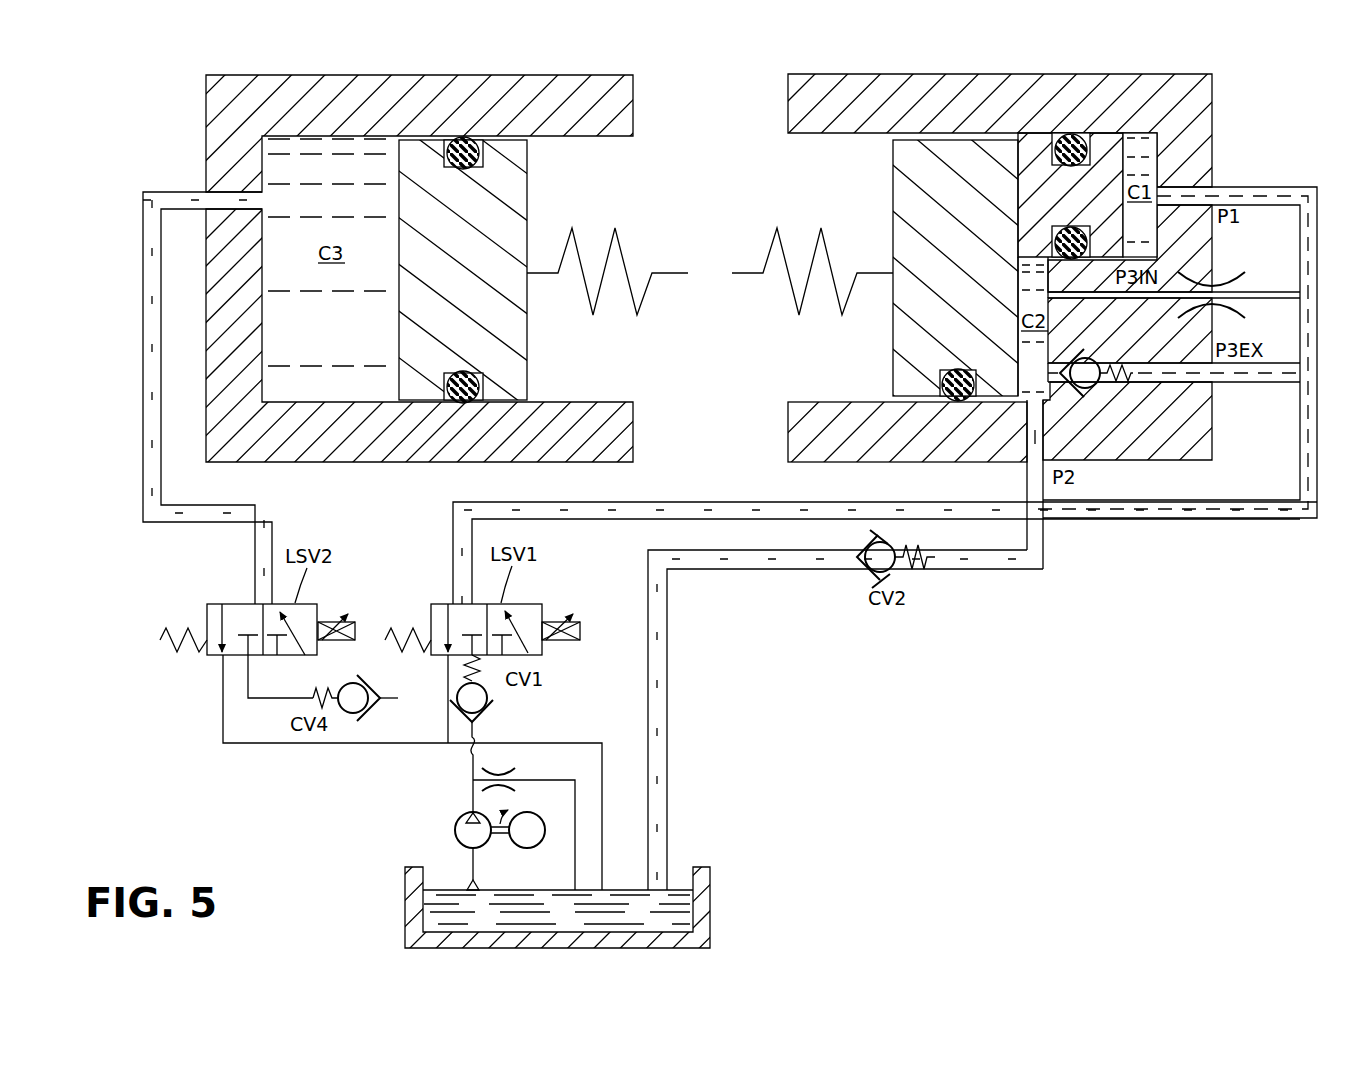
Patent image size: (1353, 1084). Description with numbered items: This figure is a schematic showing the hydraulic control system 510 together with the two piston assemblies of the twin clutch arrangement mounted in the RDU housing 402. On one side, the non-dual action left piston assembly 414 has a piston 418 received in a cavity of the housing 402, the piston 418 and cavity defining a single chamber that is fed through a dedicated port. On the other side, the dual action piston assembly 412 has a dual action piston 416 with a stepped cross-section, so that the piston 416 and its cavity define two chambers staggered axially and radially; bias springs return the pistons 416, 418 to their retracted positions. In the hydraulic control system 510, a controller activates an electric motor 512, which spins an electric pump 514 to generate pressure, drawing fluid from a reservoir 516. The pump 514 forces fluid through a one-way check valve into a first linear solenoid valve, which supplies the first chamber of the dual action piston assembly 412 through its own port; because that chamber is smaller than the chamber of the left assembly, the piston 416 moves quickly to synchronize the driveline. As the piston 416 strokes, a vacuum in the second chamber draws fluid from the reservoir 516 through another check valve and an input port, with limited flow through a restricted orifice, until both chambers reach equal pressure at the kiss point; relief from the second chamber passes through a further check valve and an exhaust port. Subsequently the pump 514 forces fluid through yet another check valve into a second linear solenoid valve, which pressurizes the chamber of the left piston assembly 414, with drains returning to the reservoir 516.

The RDU housing 402 is at (300, 75).
The dual action piston assembly 412 is at (1072, 564).
The non-dual action left piston assembly 414 is at (193, 537).
The dual action piston 416 is at (968, 152).
The piston 418 is at (507, 150).
The hydraulic control system 510 is at (330, 765).
The electric motor 512 is at (547, 830).
The electric pump 514 is at (453, 828).
The reservoir 516 is at (665, 912).